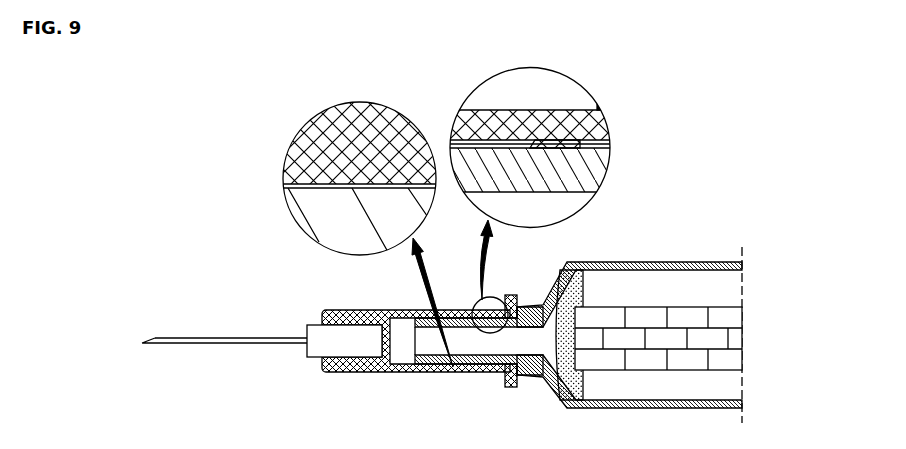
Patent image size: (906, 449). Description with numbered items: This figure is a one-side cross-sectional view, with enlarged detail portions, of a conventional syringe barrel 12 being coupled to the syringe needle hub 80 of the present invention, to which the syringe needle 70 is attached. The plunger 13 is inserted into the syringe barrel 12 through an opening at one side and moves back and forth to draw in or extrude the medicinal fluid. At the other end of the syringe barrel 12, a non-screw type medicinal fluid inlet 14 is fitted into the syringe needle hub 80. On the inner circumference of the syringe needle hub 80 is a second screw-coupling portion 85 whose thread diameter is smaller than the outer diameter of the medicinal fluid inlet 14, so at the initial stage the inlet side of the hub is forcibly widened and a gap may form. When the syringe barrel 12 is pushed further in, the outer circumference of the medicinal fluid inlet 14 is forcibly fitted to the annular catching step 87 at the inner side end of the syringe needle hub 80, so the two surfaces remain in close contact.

The syringe needle 70 is at (226, 338).
The syringe needle hub 80 is at (345, 312).
The annular catching step 87 is at (326, 129).
The second screw-coupling portion 85 is at (600, 140).
The medicinal fluid inlet 14 is at (592, 167).
The syringe barrel 12 is at (650, 262).
The plunger 13 is at (692, 318).